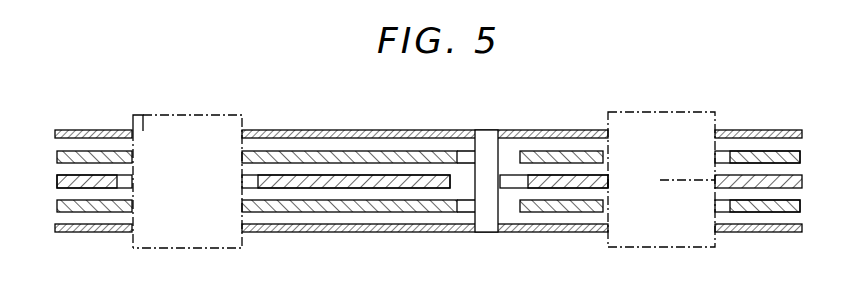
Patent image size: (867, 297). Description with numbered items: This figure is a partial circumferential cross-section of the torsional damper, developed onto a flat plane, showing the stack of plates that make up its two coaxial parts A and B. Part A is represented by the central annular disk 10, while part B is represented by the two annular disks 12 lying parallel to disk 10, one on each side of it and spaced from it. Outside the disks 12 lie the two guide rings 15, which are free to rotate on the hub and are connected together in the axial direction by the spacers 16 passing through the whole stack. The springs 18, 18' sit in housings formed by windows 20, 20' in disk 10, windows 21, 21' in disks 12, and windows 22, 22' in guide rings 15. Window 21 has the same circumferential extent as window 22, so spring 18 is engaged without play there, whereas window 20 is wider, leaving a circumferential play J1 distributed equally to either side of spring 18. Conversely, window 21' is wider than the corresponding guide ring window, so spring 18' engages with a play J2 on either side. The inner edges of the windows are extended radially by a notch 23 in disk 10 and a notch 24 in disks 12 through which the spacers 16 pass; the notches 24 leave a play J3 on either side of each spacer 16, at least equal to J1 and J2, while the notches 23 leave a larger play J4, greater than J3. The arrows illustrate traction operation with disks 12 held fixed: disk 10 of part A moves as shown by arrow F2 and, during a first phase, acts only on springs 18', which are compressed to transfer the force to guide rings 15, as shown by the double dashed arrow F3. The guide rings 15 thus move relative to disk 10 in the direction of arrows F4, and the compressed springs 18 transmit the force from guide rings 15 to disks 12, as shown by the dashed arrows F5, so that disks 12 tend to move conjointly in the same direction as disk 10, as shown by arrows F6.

The annular disk 10 is at (790, 174).
The annular disks 12 is at (769, 199).
The guide rings 15 is at (746, 224).
The spacers 16 is at (496, 189).
The spring 18 is at (187, 150).
The spring 18' is at (663, 151).
The window 20 is at (94, 145).
The window 20' is at (646, 134).
The window 21 is at (128, 177).
The window 21' is at (450, 182).
The window 22 is at (116, 186).
The window 22' is at (696, 183).
The notch 23 is at (531, 181).
The notch 24 is at (520, 154).
The coaxial part A is at (335, 190).
The coaxial part B is at (342, 150).
The arrow F2 is at (823, 180).
The double dashed arrow F3 is at (638, 134).
The arrows F4 is at (375, 242).
The dashed arrows F5 is at (242, 228).
The arrows F6 is at (57, 158).
The circumferential play J1 is at (117, 163).
The circumferential play J2 is at (592, 200).
The circumferential play J3 is at (529, 116).
The circumferential play J4 is at (528, 245).